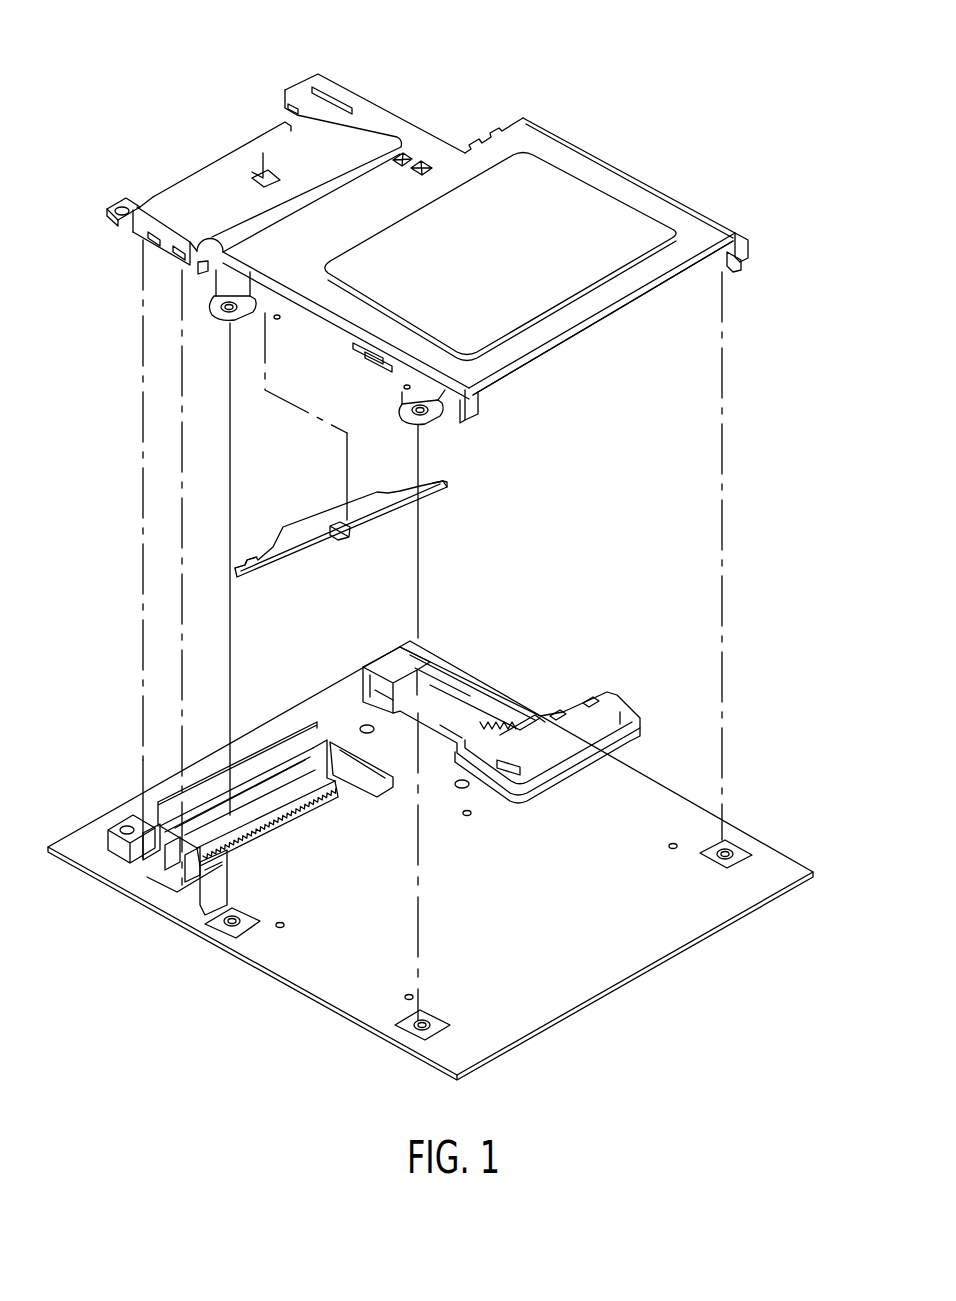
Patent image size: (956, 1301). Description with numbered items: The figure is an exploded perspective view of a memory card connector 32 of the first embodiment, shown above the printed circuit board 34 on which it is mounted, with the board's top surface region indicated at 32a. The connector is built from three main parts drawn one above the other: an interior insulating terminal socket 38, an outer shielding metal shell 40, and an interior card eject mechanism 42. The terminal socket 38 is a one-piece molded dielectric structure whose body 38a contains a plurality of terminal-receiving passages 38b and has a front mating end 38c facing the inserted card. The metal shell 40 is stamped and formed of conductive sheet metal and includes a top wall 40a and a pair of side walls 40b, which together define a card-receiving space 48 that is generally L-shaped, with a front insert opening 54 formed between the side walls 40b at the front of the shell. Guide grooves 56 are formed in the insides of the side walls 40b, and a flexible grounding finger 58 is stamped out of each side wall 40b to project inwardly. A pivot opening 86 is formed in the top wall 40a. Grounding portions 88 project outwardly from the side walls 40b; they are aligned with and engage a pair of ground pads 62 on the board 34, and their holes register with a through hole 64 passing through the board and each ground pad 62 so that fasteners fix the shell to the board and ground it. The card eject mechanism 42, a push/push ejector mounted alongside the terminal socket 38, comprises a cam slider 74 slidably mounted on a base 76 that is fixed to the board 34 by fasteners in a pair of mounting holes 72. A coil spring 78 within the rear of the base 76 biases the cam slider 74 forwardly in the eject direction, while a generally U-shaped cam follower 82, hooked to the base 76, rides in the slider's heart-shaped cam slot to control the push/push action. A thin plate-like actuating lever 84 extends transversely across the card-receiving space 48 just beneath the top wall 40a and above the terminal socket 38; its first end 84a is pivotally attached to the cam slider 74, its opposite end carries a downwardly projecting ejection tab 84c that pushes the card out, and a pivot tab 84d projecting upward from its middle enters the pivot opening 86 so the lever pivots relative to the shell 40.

The memory card connector 32 is at (650, 163).
The circuit board substrate 32a is at (540, 893).
The printed circuit board 34 is at (765, 828).
The terminal socket 38 is at (303, 712).
The body 38a is at (267, 780).
The terminal-receiving passages 38b is at (285, 807).
The front mating end 38c is at (210, 780).
The metal shell 40 is at (552, 113).
The top wall 40a is at (597, 172).
The side walls 40b is at (753, 252).
The card eject mechanism 42 is at (630, 687).
The card-receiving space 48 is at (552, 353).
The front insert opening 54 is at (620, 317).
The guide grooves 56 is at (733, 267).
The flexible grounding finger 58 is at (368, 346).
The ground pads 62 is at (718, 862).
The through hole 64 is at (734, 856).
The mounting holes 72 is at (370, 735).
The cam slider 74 is at (449, 708).
The base 76 is at (513, 723).
The coil spring 78 is at (490, 713).
The cam follower 82 is at (413, 676).
The actuating lever 84 is at (287, 522).
The first end 84a is at (447, 492).
The ejection tab 84c is at (246, 562).
The pivot tab 84d is at (332, 525).
The pivot opening 86 is at (253, 175).
The grounding portions 88 is at (213, 318).